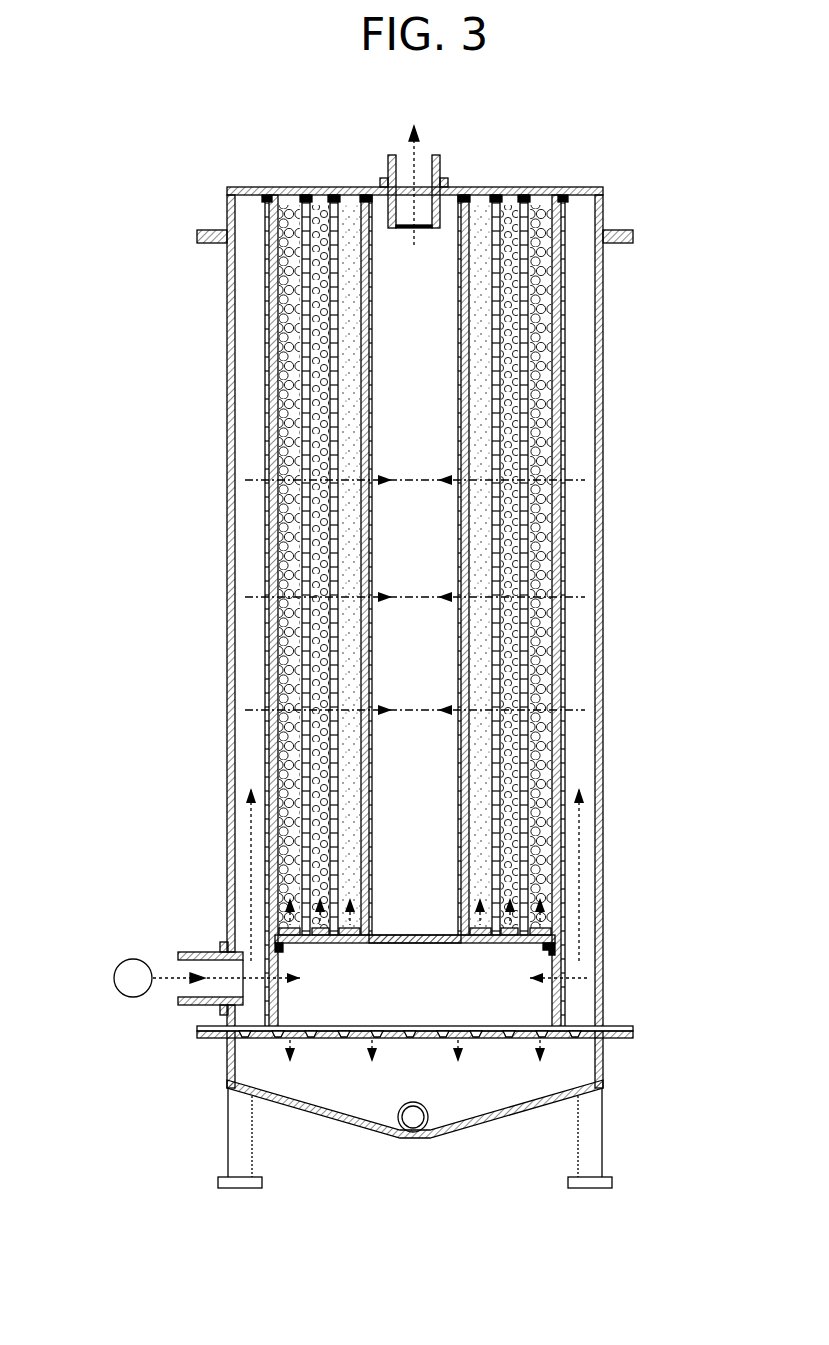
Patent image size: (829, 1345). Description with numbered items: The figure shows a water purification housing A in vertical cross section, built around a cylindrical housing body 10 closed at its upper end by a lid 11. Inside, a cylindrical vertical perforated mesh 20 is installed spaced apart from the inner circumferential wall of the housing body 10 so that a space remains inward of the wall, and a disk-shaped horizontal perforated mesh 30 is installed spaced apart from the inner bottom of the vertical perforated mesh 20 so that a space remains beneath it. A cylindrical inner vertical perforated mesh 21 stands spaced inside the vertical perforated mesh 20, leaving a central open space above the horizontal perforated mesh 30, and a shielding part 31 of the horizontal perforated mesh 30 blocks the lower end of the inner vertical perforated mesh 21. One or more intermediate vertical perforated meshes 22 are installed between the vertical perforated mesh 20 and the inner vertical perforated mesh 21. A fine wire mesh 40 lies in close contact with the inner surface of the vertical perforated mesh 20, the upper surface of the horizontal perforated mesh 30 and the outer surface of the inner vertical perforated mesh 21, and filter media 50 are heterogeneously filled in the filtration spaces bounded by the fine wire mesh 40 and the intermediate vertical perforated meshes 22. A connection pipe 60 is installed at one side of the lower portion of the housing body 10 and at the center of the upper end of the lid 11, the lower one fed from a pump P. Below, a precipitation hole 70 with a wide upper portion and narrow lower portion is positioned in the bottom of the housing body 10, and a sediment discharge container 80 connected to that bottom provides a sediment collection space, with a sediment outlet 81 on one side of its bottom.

The water purification housing A is at (205, 175).
The housing body 10 is at (597, 300).
The lid 11 is at (577, 192).
The vertical perforated mesh 20 is at (560, 383).
The inner vertical perforated mesh 21 is at (457, 647).
The intermediate vertical perforated mesh 22 is at (527, 507).
The horizontal perforated mesh 30 is at (527, 950).
The shielding part 31 is at (420, 927).
The fine wire mesh 40 is at (555, 415).
The filter media 50 is at (542, 455).
The connection pipe 60 is at (438, 165).
The precipitation hole 70 is at (495, 1027).
The sediment discharge container 80 is at (600, 1060).
The sediment outlet 81 is at (420, 1118).
The pump P is at (133, 978).